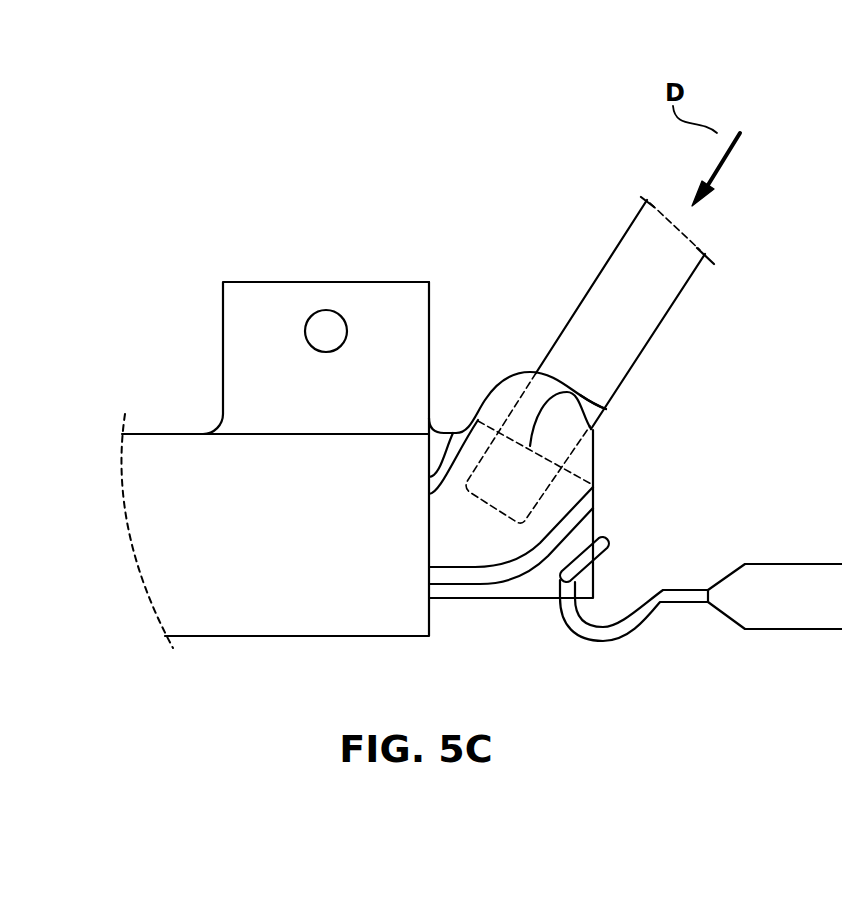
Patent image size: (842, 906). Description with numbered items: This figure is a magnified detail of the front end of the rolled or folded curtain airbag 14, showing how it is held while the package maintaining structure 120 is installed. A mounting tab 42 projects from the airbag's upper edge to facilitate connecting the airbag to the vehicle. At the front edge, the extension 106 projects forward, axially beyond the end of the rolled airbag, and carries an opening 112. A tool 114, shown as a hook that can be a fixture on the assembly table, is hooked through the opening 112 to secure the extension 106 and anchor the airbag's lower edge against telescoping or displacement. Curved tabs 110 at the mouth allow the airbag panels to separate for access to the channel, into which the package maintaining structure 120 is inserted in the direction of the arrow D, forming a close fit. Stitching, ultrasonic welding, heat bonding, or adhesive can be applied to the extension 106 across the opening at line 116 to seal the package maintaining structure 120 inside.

The curtain airbag 14 is at (265, 585).
The mounting tab 42 is at (258, 318).
The extension 106 is at (492, 402).
The curved tab 110 is at (517, 387).
The opening 112 is at (552, 569).
The tool 114 is at (587, 638).
The line 116 is at (606, 409).
The package maintaining structure 120 is at (648, 262).